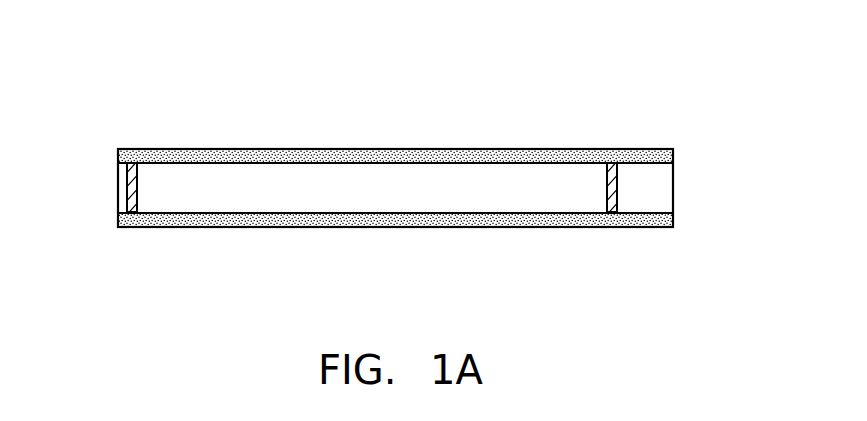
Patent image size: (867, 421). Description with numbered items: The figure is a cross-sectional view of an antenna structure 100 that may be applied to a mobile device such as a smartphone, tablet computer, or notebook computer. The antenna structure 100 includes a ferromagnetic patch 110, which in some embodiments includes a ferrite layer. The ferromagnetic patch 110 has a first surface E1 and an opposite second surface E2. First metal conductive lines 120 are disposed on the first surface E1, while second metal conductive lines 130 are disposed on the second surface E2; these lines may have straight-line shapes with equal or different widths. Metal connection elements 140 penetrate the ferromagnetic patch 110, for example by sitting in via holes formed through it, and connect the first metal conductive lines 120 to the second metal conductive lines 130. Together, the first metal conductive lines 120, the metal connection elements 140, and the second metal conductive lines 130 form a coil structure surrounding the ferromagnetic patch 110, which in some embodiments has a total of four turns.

The antenna structure 100 is at (78, 54).
The ferromagnetic patch 110 is at (662, 187).
The first metal conductive lines 120 is at (460, 154).
The second metal conductive lines 130 is at (462, 216).
The metal connection elements 140 is at (132, 172).
The first surface E1 is at (538, 162).
The second surface E2 is at (540, 214).